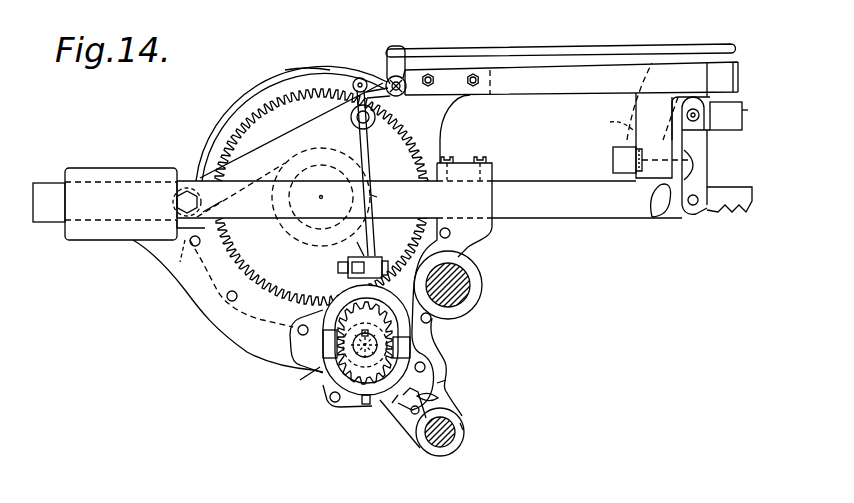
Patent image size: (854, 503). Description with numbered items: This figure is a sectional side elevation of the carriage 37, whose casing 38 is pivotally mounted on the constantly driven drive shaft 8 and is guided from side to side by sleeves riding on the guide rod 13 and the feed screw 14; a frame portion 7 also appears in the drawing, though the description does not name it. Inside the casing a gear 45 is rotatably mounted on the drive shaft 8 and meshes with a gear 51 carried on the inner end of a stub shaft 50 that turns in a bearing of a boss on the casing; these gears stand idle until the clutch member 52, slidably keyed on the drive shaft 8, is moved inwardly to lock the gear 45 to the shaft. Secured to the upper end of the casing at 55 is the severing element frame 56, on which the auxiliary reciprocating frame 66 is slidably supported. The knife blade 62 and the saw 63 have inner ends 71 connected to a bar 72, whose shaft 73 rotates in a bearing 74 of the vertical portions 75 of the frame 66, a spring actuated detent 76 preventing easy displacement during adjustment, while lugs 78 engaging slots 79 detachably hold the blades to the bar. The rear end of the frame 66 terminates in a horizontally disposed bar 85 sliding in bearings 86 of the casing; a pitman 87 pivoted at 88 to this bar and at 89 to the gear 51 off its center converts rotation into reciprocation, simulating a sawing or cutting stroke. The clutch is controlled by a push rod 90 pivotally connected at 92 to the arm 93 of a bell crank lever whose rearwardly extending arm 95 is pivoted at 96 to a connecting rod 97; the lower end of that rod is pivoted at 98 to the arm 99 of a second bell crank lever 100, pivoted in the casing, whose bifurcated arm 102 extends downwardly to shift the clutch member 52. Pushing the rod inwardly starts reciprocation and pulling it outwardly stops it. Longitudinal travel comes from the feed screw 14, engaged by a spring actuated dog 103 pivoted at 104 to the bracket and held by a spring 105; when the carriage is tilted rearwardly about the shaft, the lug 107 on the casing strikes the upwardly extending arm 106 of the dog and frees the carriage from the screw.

The frame arm 7 is at (450, 373).
The drive shaft 8 is at (337, 360).
The guide rod 13 is at (458, 290).
The feed screw 14 is at (460, 423).
The carriage 37 is at (226, 113).
The casing 38 is at (295, 67).
The gear 45 is at (392, 403).
The stub shaft 50 is at (314, 160).
The gear 51 is at (276, 112).
The clutch member 52 is at (360, 350).
The securing point 55 is at (474, 73).
The severing element frame 56 is at (623, 72).
The knife blade 62 is at (736, 130).
The saw 63 is at (733, 213).
The auxiliary reciprocating frame 66 is at (705, 66).
The inner ends 71 is at (711, 101).
The bar 72 is at (655, 187).
The shaft 73 is at (653, 163).
The bearing 74 is at (609, 119).
The vertical portions 75 is at (638, 137).
The spring actuated detent 76 is at (676, 100).
The lugs 78 is at (697, 111).
The slots 79 is at (713, 202).
The horizontally disposed bar 85 is at (429, 199).
The bearings 86 is at (118, 168).
The pitman 87 is at (236, 170).
The pivotal connection 88 is at (165, 246).
The pivotal connection 89 is at (354, 100).
The push rod 90 is at (587, 47).
The pivotal connection 92 is at (400, 45).
The arm 93 is at (392, 67).
The arm 95 is at (383, 90).
The pivotal connection 96 is at (370, 93).
The connecting rod 97 is at (377, 200).
The pivotal connection 98 is at (357, 242).
The arm 99 is at (345, 272).
The bell crank lever 100 is at (337, 293).
The bifurcated arm 102 is at (333, 307).
The spring actuated dog 103 is at (421, 445).
The pivot 104 is at (413, 418).
The spring 105 is at (437, 383).
The arm 106 is at (405, 402).
The lug 107 is at (360, 418).